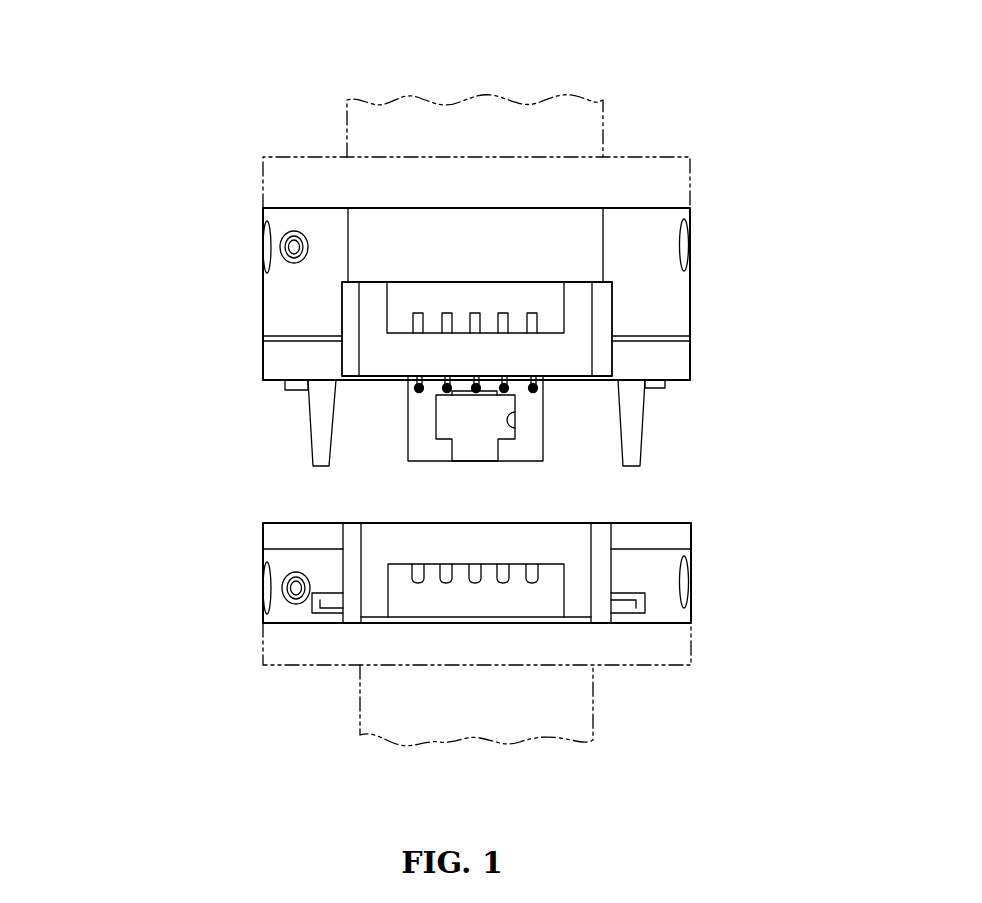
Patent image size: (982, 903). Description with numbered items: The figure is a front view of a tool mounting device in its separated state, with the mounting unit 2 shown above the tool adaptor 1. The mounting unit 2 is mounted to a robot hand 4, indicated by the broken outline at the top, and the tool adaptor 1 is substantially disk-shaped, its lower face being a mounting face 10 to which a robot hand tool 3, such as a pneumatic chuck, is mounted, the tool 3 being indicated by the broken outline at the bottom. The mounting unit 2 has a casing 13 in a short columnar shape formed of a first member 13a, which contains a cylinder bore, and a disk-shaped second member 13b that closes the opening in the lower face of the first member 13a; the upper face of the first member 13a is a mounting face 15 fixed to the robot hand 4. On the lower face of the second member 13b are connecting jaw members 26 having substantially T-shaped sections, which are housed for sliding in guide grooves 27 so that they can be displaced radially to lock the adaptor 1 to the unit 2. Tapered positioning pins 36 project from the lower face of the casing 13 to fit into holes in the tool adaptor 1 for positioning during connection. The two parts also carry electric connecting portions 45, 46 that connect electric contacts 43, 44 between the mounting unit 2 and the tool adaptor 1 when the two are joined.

The tool adaptor 1 is at (717, 568).
The mounting unit 2 is at (712, 297).
The robot hand tool 3 is at (490, 706).
The robot hand 4 is at (440, 108).
The mounting face 10 is at (668, 623).
The casing 13 is at (385, 343).
The first member 13a is at (263, 306).
The second member 13b is at (415, 366).
The mounting face 15 is at (640, 207).
The connecting jaw members 26 is at (510, 442).
The guide grooves 27 is at (514, 420).
The tapered positioning pins 36 is at (318, 448).
The electric contacts 43 is at (447, 394).
The electric contacts 44 is at (532, 570).
The electric connecting portion 45 is at (475, 432).
The electric connecting portion 46 is at (415, 597).